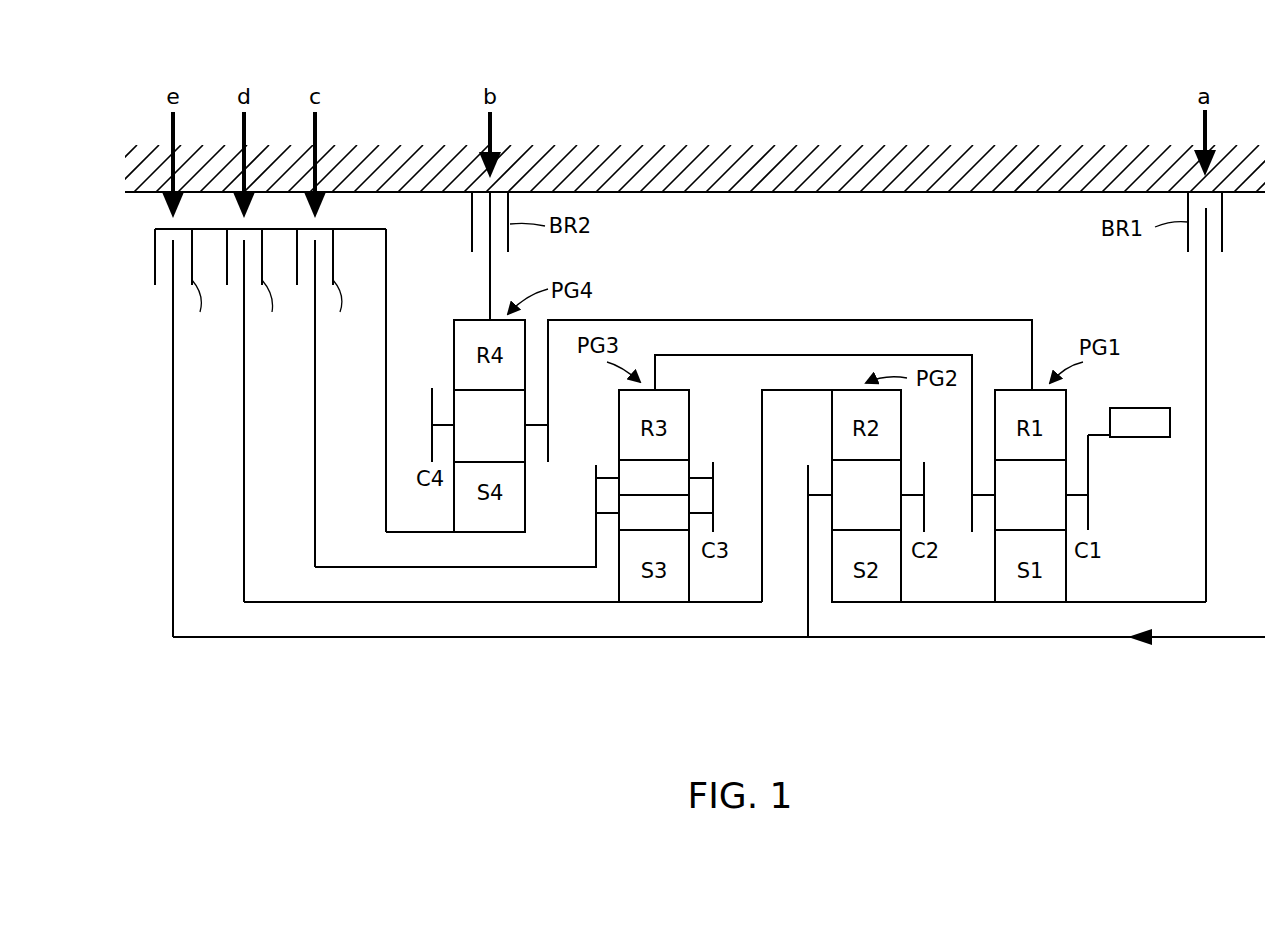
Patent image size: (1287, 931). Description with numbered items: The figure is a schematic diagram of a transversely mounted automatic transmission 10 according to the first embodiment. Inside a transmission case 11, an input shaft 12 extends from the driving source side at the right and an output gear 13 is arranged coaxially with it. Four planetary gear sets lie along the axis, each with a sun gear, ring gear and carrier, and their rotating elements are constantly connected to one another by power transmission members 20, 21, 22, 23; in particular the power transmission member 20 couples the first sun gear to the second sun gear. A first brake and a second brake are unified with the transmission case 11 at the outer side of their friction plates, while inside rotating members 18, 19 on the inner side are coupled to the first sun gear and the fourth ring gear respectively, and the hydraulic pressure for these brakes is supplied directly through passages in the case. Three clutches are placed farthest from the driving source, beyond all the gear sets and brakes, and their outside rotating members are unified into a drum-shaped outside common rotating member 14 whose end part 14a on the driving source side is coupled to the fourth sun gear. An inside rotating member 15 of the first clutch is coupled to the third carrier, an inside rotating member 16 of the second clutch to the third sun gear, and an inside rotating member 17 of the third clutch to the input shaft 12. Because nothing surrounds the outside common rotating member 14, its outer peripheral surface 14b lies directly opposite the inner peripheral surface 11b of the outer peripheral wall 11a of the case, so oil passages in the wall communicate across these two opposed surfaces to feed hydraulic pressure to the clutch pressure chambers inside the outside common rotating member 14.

The automatic transmission 10 is at (1128, 80).
The transmission case 11 is at (862, 140).
The outer peripheral wall 11a is at (758, 145).
The inner peripheral surface 11b is at (825, 193).
The input shaft 12 is at (1225, 634).
The output gear 13 is at (1133, 407).
The outside common rotating member 14 is at (392, 287).
The end part 14a is at (422, 533).
The outer peripheral surface 14b is at (372, 231).
The inside rotating member 15 is at (568, 570).
The inside rotating member 16 is at (518, 604).
The inside rotating member 17 is at (470, 639).
The inside rotating member 18 is at (1208, 520).
The inside rotating member 19 is at (493, 267).
The power transmission member 20 is at (957, 603).
The power transmission member 21 is at (713, 318).
The power transmission member 22 is at (767, 353).
The power transmission member 23 is at (810, 388).